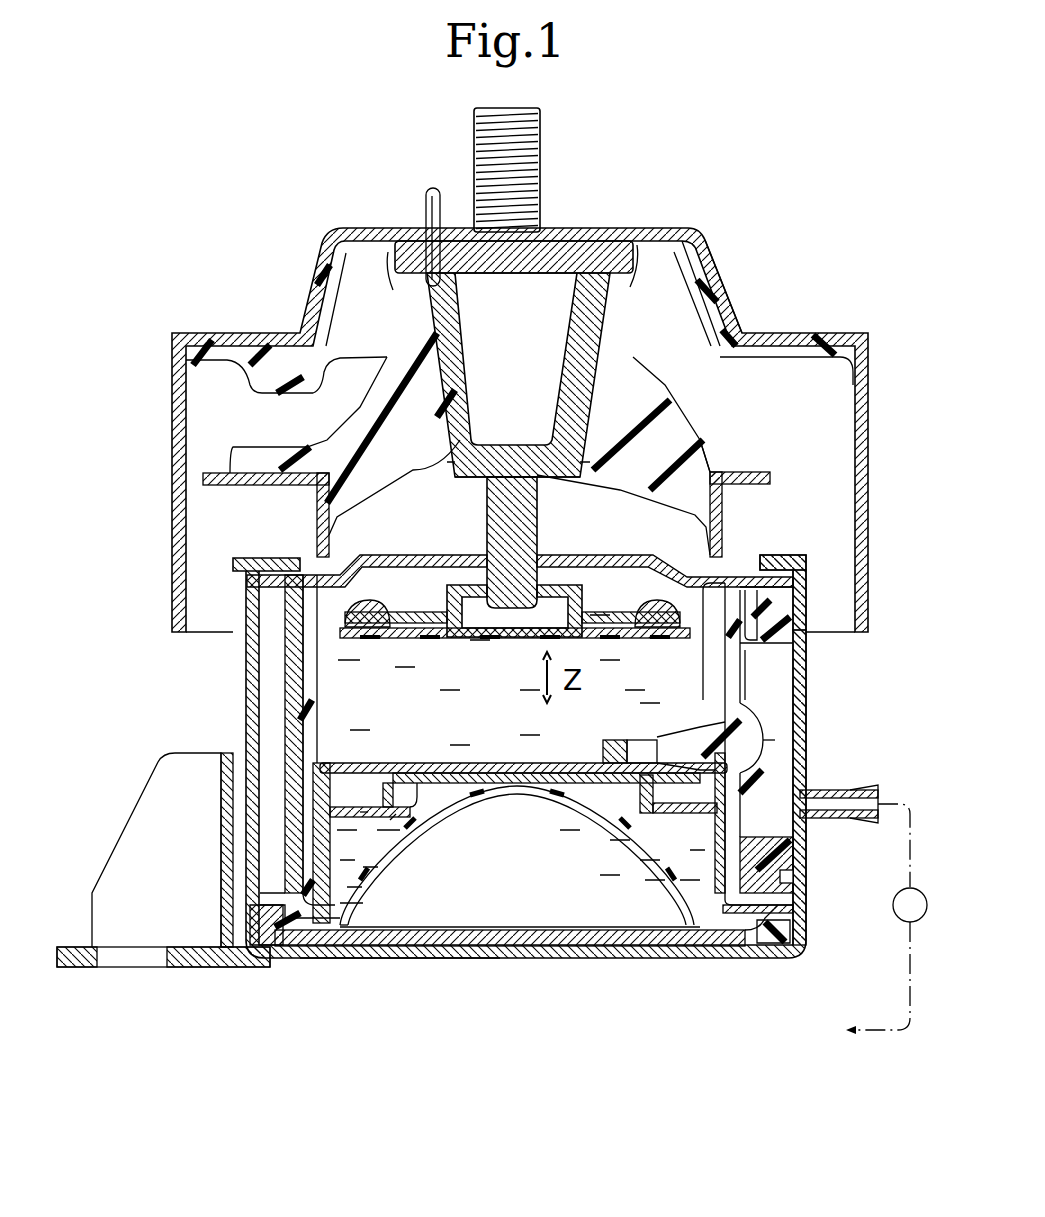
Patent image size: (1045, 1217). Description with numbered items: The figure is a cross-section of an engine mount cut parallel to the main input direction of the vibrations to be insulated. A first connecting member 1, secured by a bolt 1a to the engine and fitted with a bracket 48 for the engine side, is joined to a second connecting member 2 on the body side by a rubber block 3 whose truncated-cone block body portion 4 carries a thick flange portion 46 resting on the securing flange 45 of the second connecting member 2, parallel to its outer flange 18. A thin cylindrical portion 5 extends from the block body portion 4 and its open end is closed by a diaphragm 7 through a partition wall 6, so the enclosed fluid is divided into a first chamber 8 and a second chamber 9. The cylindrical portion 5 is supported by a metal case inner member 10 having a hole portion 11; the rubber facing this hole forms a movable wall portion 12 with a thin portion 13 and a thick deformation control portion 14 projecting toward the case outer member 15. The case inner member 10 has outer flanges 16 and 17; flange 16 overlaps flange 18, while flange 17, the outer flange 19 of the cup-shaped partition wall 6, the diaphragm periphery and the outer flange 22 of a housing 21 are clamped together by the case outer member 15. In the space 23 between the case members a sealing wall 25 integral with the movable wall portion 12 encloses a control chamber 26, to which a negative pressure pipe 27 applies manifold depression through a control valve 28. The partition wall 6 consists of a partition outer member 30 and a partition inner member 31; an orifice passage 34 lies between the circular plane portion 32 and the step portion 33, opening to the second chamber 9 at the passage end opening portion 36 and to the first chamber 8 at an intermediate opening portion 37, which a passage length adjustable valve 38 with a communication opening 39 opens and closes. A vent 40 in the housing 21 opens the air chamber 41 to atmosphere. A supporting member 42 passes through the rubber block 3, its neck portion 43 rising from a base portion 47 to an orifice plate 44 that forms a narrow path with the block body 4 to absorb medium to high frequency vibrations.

The first connecting member 1 is at (586, 229).
The bolt 1a is at (542, 130).
The second connecting member 2 is at (750, 500).
The rubber block 3 is at (714, 427).
The block body portion 4 is at (640, 400).
The cylindrical portion 5 is at (636, 650).
The partition wall 6 is at (523, 743).
The diaphragm 7 is at (480, 797).
The first chamber 8 is at (492, 737).
The second chamber 9 is at (660, 850).
The case inner member 10 is at (243, 662).
The hole portion 11 is at (757, 840).
The movable wall portion 12 is at (760, 682).
The thin portion 13 is at (728, 688).
The deformation control portion 14 is at (750, 731).
The case outer member 15 is at (806, 733).
The outer flange 16 is at (807, 600).
The outer flange 17 is at (795, 900).
The outer flange 18 is at (774, 557).
The outer flange 19 is at (795, 933).
The housing 21 is at (437, 957).
The outer flange 22 is at (740, 937).
The space 23 is at (260, 710).
The sealing wall 25 is at (785, 640).
The control chamber 26 is at (777, 767).
The negative pressure pipe 27 is at (830, 820).
The control valve 28 is at (905, 922).
The partition outer member 30 is at (387, 756).
The partition inner member 31 is at (430, 756).
The circular plane portion 32 is at (340, 763).
The step portion 33 is at (415, 808).
The orifice passage 34 is at (388, 818).
The passage end opening portion 36 is at (362, 812).
The intermediate opening portion 37 is at (657, 787).
The passage length adjustable valve 38 is at (600, 742).
The communication opening 39 is at (640, 740).
The vent 40 is at (537, 947).
The air chamber 41 is at (510, 907).
The supporting member 42 is at (448, 320).
The neck portion 43 is at (533, 503).
The orifice plate 44 is at (480, 617).
The securing flange 45 is at (768, 473).
The thick flange portion 46 is at (712, 462).
The base portion 47 is at (470, 462).
The bracket 48 is at (718, 295).